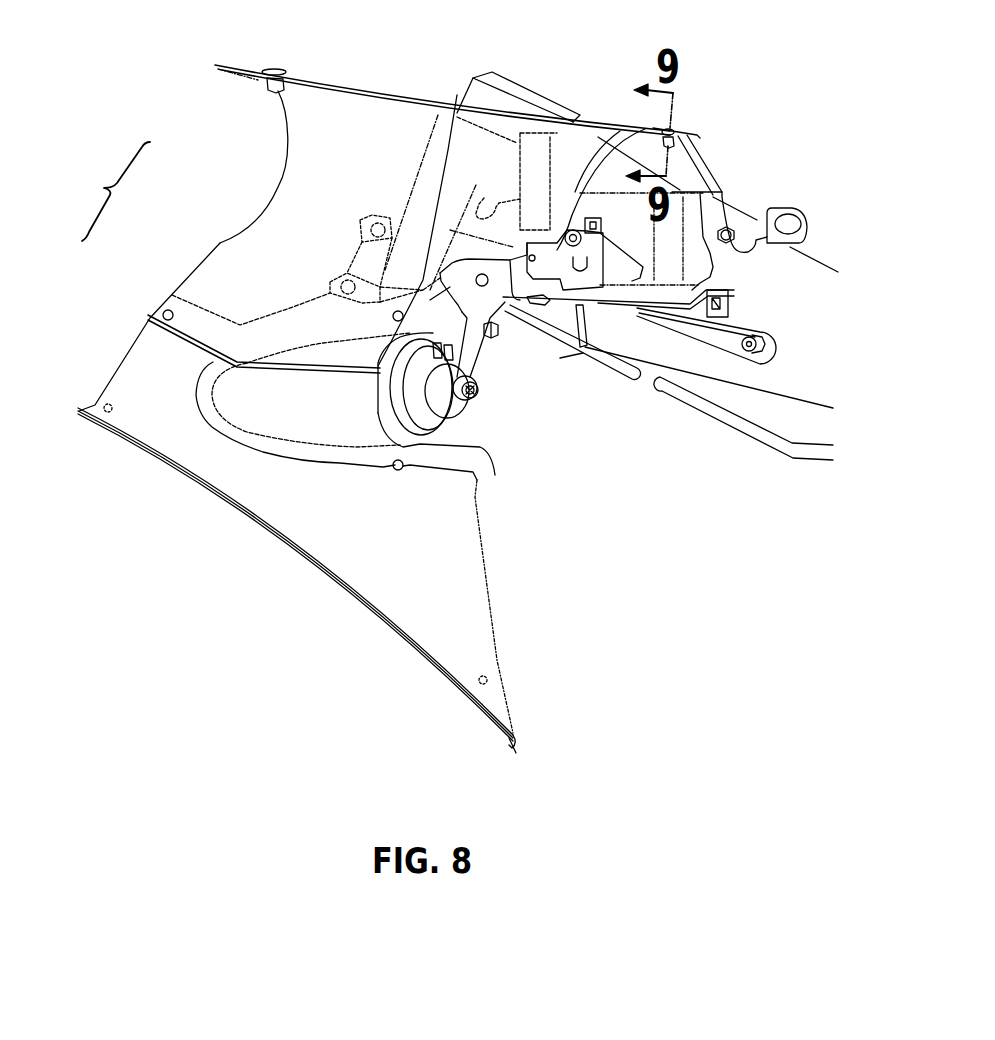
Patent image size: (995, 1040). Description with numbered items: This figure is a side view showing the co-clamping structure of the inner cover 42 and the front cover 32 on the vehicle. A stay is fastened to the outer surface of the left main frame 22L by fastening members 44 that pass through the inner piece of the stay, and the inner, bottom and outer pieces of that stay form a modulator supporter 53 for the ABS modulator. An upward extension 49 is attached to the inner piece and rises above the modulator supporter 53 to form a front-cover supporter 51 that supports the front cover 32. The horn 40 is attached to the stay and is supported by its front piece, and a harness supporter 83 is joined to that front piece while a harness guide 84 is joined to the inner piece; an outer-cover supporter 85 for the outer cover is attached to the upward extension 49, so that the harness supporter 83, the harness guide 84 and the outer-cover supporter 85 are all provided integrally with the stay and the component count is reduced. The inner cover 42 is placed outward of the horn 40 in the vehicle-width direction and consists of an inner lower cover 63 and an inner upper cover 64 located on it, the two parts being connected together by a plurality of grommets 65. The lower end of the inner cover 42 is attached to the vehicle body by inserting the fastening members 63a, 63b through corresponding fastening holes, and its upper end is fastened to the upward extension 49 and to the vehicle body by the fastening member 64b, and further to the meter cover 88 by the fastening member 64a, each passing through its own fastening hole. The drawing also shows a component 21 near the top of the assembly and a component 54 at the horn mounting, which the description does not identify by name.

The control unit box 21 is at (498, 92).
The left main frame 22L is at (792, 300).
The front cover 32 is at (193, 478).
The horn 40 is at (427, 430).
The inner cover 42 is at (104, 187).
The fastening members 44 is at (732, 230).
The upward extension 49 is at (722, 169).
The front-cover supporter 51 is at (697, 135).
The modulator supporter 53 is at (598, 283).
The speaker mounting bolt 54 is at (474, 392).
The inner lower cover 63 is at (142, 387).
The fastening member 63a is at (104, 416).
The fastening member 63b is at (482, 688).
The inner upper cover 64 is at (310, 217).
The fastening member 64a is at (280, 66).
The fastening member 64b is at (674, 130).
The grommets 65 is at (172, 322).
The harness supporter 83 is at (578, 340).
The harness guide 84 is at (484, 198).
The outer-cover supporter 85 is at (797, 207).
The meter cover 88 is at (226, 63).